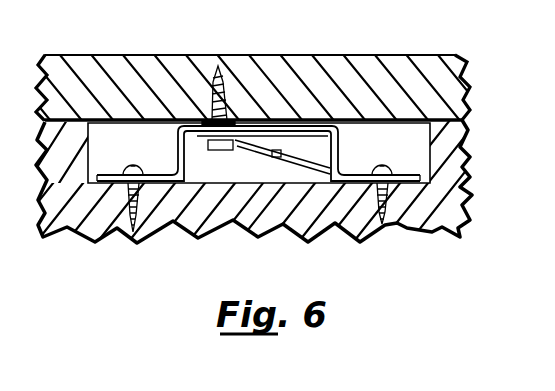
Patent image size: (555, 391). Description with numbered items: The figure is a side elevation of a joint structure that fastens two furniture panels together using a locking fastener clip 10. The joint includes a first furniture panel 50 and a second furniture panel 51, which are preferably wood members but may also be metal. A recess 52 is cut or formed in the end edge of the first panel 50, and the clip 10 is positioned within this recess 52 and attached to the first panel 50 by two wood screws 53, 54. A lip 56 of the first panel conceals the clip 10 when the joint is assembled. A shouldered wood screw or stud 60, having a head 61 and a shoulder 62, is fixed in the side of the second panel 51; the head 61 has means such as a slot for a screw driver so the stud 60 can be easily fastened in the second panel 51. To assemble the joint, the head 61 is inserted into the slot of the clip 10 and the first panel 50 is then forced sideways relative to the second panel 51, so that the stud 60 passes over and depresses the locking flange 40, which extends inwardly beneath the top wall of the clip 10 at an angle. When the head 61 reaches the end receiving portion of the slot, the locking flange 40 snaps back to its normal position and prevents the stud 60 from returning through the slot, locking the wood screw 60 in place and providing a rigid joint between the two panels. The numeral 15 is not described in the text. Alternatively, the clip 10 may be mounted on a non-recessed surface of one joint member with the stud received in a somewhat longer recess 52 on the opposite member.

The locking fastener clip 10 is at (108, 186).
The panel 15 is at (545, 0).
The locking flange 40 is at (283, 158).
The first furniture panel 50 is at (324, 216).
The second furniture panel 51 is at (356, 78).
The recess 52 is at (400, 140).
The wood screw 53 is at (125, 216).
The wood screw 54 is at (390, 203).
The lip 56 is at (60, 142).
The shouldered wood screw 60 is at (229, 121).
The head 61 is at (218, 150).
The shoulder 62 is at (229, 120).